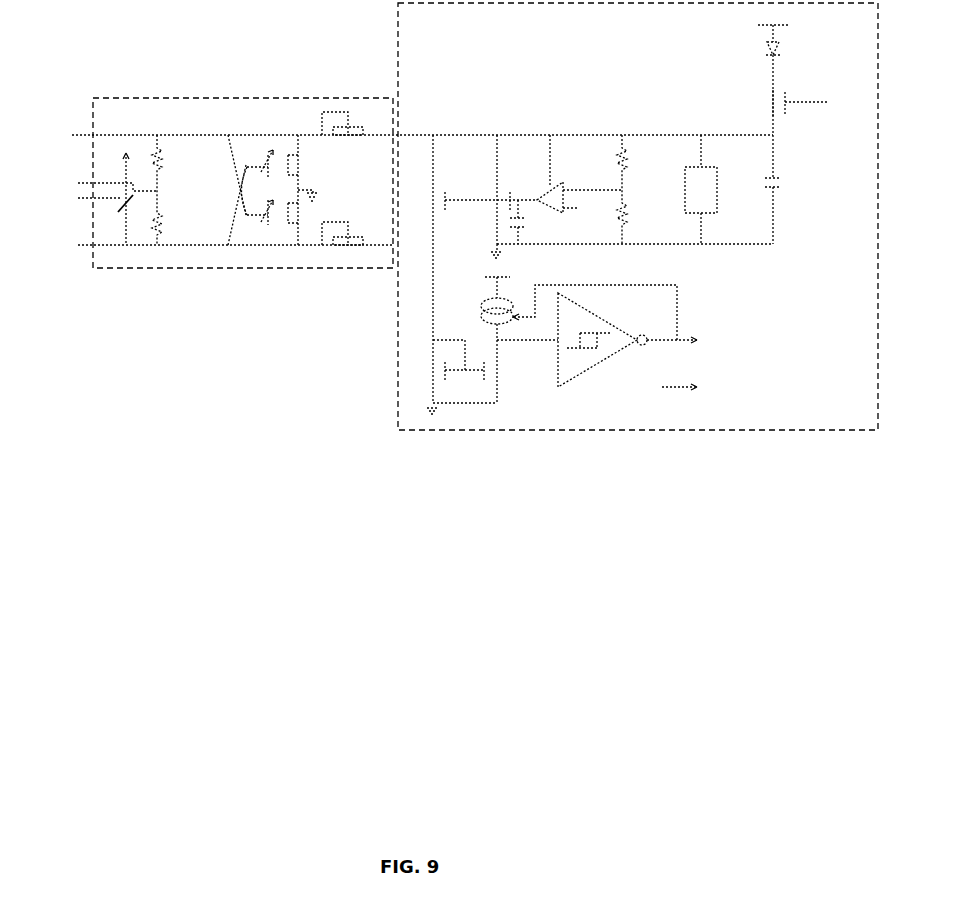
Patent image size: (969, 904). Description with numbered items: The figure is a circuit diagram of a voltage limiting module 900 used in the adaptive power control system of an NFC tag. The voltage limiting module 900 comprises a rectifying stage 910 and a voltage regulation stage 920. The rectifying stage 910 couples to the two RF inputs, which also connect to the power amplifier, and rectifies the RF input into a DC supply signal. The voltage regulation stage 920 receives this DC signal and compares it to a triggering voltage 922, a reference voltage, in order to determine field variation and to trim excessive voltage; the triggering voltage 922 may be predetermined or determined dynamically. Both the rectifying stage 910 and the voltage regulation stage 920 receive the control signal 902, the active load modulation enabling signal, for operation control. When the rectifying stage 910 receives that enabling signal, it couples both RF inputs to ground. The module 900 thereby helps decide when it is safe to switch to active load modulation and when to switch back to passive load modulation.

The voltage limiting module 900 is at (555, 483).
The control signal 902 is at (805, 102).
The rectifying stage 910 is at (200, 268).
The voltage regulation stage 920 is at (707, 430).
The triggering voltage 922 is at (575, 211).